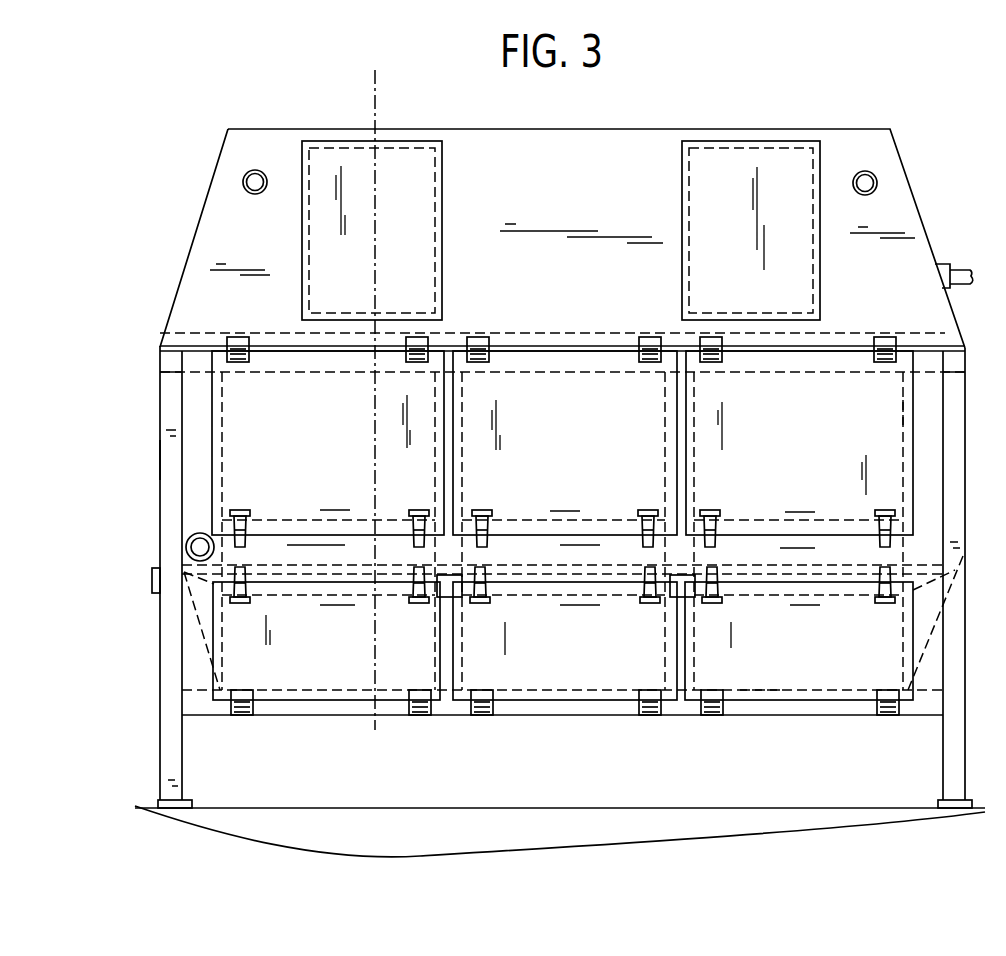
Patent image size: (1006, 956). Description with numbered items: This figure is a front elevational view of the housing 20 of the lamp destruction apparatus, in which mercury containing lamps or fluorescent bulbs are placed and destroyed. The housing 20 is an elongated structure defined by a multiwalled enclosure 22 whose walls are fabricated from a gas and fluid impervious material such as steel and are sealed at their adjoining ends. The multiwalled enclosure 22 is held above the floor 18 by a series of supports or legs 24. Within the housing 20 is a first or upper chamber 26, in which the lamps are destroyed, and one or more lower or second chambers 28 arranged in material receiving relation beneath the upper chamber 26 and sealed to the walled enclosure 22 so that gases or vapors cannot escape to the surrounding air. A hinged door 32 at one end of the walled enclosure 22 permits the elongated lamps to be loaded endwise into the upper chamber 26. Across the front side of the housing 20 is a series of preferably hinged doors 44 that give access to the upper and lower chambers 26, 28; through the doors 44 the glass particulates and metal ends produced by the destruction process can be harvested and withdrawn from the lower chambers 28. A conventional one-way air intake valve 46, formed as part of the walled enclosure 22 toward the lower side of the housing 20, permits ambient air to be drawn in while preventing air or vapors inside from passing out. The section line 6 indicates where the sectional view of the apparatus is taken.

The section line 6- 6 is at (428, 70).
The floor 18 is at (348, 808).
The elongated housing 20 is at (737, 112).
The multiwalled enclosure 22 is at (558, 197).
The legs 24 is at (183, 767).
The first or upper chamber 26 is at (903, 415).
The second chambers 28 is at (745, 688).
The hinged door 32 is at (160, 462).
The hinged doors 44 is at (321, 449).
The one-way air intake valve 46 is at (200, 533).